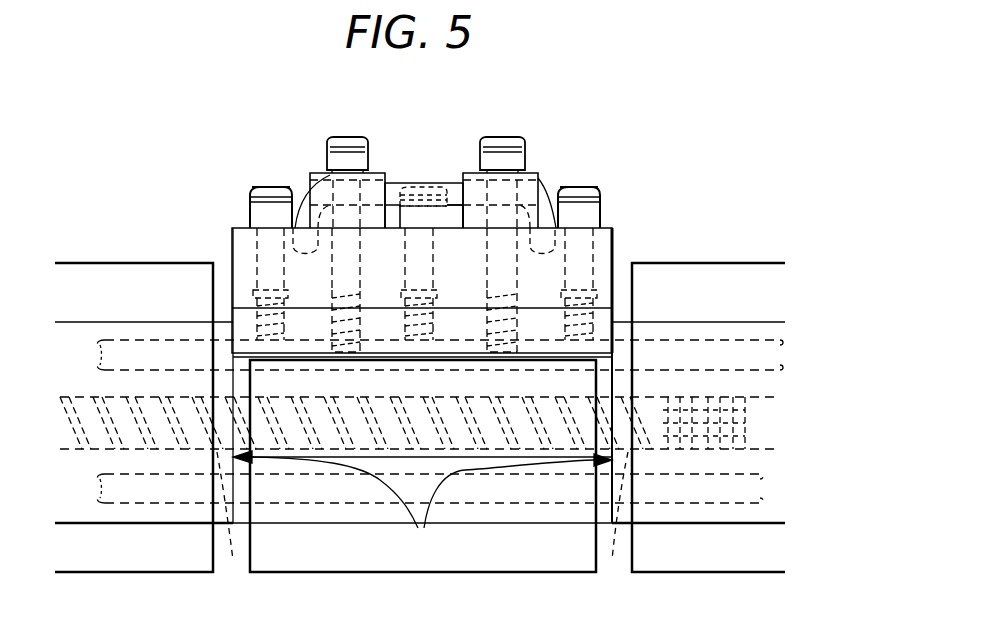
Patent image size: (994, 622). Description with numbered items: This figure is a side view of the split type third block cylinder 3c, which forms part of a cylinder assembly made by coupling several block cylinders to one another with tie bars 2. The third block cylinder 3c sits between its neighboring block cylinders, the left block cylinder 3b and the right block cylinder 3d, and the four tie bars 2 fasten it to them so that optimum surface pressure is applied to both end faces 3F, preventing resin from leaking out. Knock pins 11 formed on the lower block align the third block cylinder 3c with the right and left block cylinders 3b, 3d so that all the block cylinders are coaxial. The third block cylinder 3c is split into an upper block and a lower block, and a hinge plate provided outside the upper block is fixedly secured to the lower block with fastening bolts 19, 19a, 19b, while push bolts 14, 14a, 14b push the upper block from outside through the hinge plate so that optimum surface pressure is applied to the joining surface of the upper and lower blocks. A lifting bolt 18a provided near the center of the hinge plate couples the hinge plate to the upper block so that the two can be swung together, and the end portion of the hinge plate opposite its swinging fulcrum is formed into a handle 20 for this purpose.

The tie bar 2 is at (728, 357).
The block cylinder 3b is at (117, 260).
The third block cylinder 3c is at (613, 217).
The block cylinder 3d is at (688, 260).
The end face 3F is at (432, 464).
The knock pin 11 is at (423, 412).
The push bolt 14 is at (256, 188).
The terminal 14a is at (413, 192).
The terminal 14b is at (590, 186).
The bolt 18a is at (510, 138).
The fastening bolt 19 is at (275, 188).
The cap 19a is at (438, 184).
The cap 19b is at (573, 188).
The handle 20 is at (390, 190).